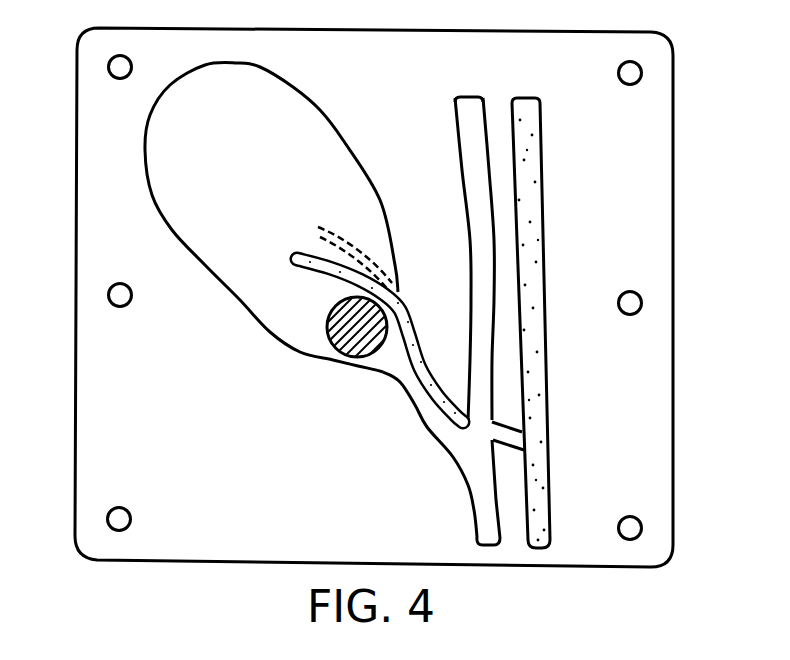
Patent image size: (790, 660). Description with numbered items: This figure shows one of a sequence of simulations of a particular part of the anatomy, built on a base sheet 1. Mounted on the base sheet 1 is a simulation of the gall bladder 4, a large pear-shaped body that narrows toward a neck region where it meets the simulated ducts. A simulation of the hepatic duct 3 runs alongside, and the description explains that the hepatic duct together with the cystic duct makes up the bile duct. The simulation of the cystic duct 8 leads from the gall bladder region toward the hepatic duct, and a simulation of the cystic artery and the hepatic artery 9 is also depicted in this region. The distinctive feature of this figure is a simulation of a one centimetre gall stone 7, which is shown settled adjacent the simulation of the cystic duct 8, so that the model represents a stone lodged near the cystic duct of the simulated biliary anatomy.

The base sheet 1 is at (657, 203).
The simulation of the hepatic duct 3 is at (483, 260).
The simulation of the gall bladder 4 is at (173, 145).
The simulation of a gall stone 7 is at (350, 355).
The simulation of the cystic duct 8 is at (430, 408).
The simulation of the cystic artery and the hepatic artery 9 is at (435, 367).